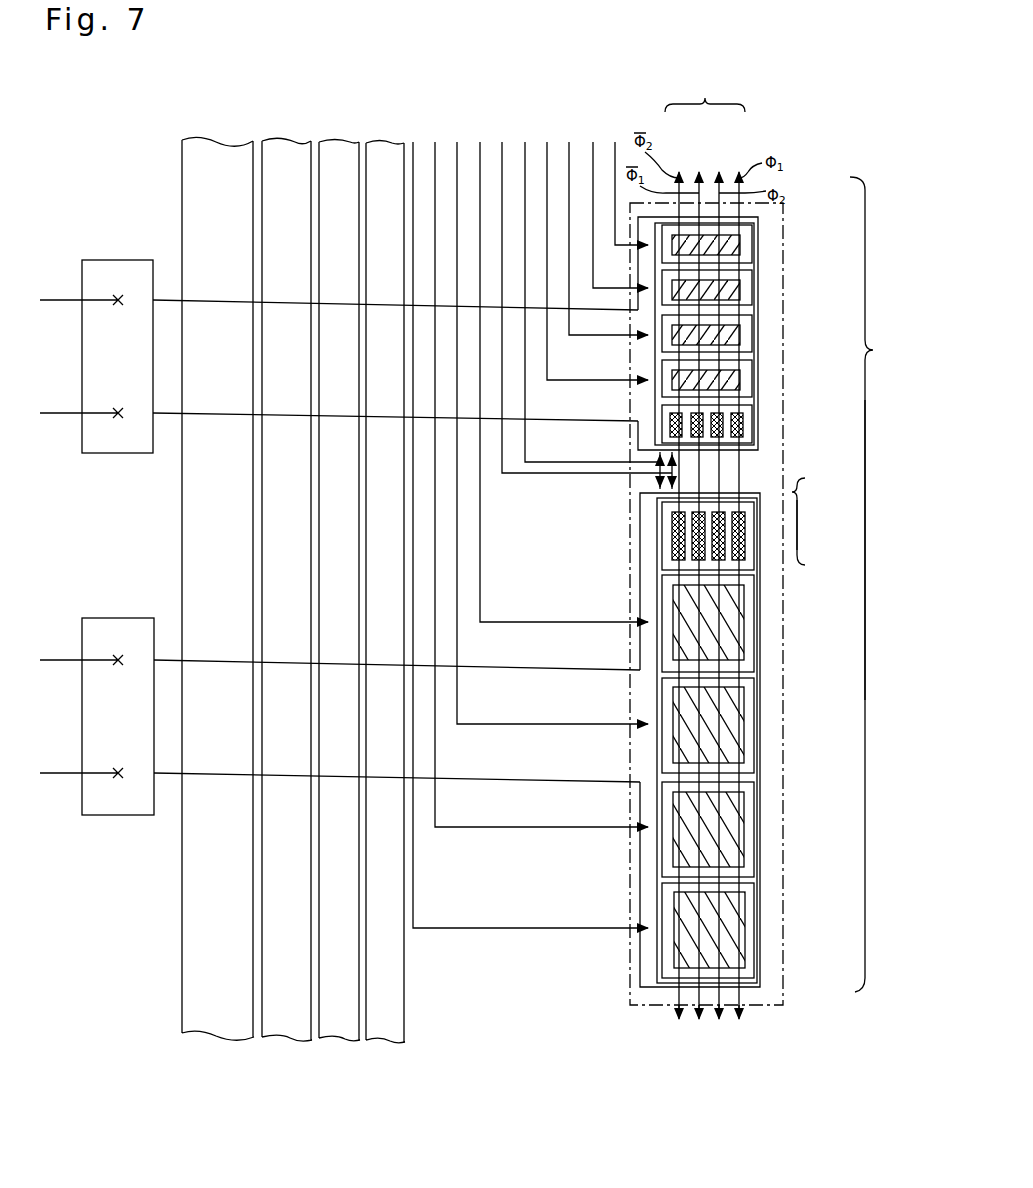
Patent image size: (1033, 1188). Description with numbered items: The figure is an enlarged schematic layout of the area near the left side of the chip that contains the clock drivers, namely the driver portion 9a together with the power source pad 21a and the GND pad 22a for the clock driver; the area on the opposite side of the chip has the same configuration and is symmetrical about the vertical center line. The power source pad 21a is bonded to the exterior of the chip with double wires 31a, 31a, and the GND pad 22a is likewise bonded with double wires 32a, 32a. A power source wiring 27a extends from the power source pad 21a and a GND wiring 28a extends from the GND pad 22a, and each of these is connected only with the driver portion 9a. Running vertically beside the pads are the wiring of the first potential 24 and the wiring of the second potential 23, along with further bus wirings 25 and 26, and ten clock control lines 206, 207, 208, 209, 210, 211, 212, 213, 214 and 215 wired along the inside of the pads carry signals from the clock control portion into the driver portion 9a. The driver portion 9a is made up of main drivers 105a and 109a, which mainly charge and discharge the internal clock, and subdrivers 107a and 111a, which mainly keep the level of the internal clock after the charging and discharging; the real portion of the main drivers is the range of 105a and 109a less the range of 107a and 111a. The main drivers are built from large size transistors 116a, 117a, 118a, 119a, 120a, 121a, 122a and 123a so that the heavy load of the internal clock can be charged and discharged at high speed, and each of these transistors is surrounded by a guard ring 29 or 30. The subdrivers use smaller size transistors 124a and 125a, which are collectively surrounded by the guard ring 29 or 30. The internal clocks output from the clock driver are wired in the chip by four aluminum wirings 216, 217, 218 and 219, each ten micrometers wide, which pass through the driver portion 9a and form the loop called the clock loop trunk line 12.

The driver portion 9a is at (640, 996).
The clock loop trunk line 12 is at (705, 88).
The power source pad 21a is at (118, 817).
The GND pad 22a is at (118, 455).
The wiring of the second potential 23 is at (340, 1040).
The wiring of the first potential 24 is at (384, 1042).
The bus line 25 is at (283, 1040).
The bus line 26 is at (205, 1034).
The power source wiring 27a is at (170, 766).
The GND wiring 28a is at (170, 406).
The guard ring 29 is at (757, 987).
The guard ring 30 is at (757, 447).
The double wires 31a is at (60, 657).
The double wires 32a is at (57, 297).
The main driver 105a is at (873, 165).
The subdriver 107a is at (833, 511).
The main driver 109a is at (852, 400).
The subdriver 111a is at (835, 516).
The large size transistor 116a is at (744, 623).
The large size transistor 117a is at (742, 245).
The large size transistor 118a is at (744, 827).
The large size transistor 119a is at (742, 335).
The large size transistor 120a is at (744, 724).
The large size transistor 121a is at (742, 290).
The large size transistor 122a is at (745, 928).
The large size transistor 123a is at (742, 380).
The smaller size transistor 124a is at (745, 541).
The smaller size transistor 125a is at (744, 425).
The clock control line 206 is at (558, 358).
The clock control line 207 is at (625, 169).
The clock control line 208 is at (535, 460).
The clock control line 209 is at (602, 214).
The clock control line 210 is at (586, 291).
The clock control line 211 is at (546, 409).
The clock control line 212 is at (614, 191).
The clock control line 213 is at (524, 511).
The clock control line 214 is at (591, 237).
The clock control line 215 is at (581, 291).
The aluminum wiring 216 is at (738, 563).
The aluminum wiring 217 is at (698, 563).
The aluminum wiring 218 is at (718, 563).
The aluminum wiring 219 is at (678, 563).